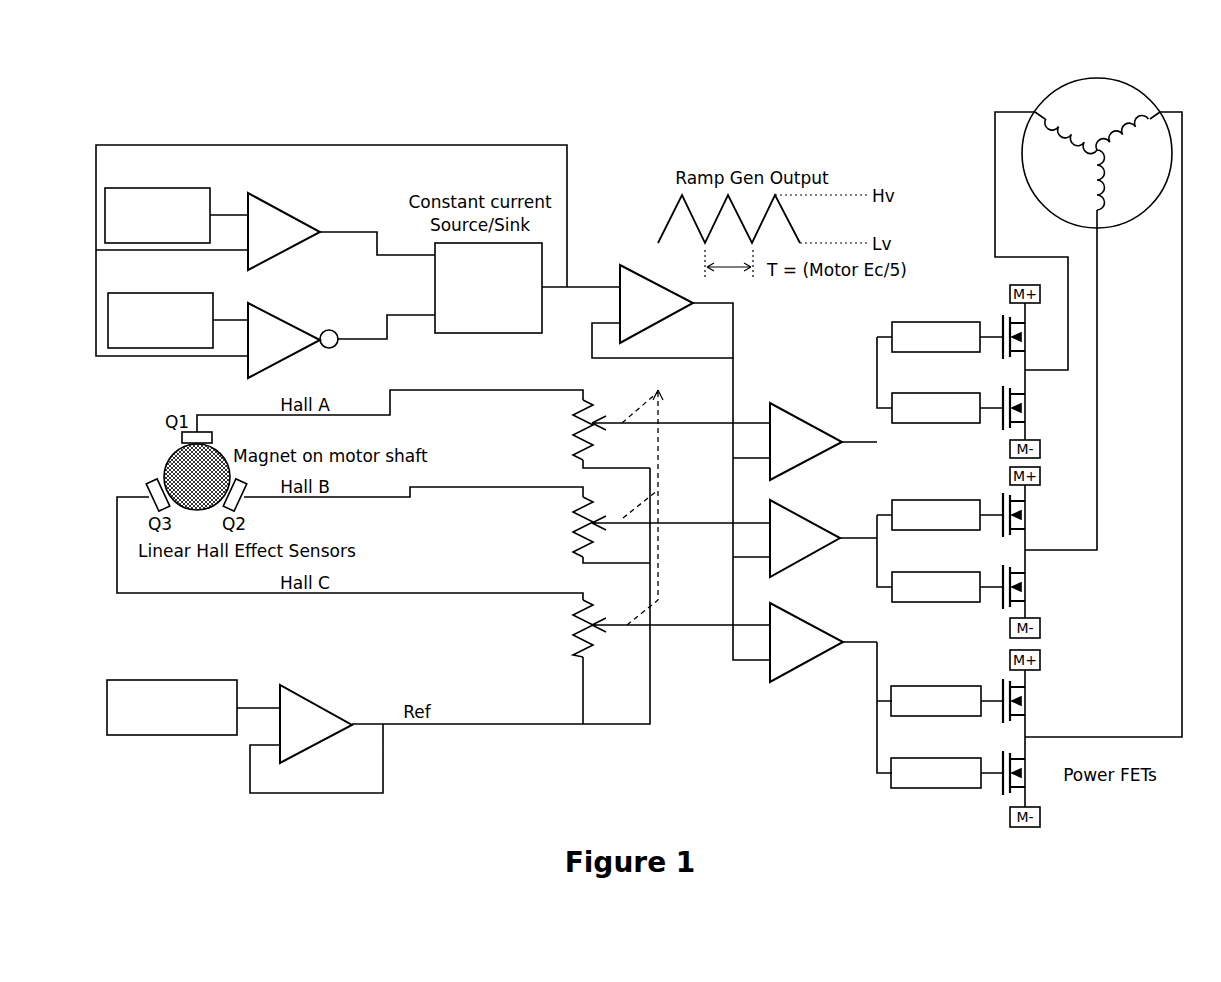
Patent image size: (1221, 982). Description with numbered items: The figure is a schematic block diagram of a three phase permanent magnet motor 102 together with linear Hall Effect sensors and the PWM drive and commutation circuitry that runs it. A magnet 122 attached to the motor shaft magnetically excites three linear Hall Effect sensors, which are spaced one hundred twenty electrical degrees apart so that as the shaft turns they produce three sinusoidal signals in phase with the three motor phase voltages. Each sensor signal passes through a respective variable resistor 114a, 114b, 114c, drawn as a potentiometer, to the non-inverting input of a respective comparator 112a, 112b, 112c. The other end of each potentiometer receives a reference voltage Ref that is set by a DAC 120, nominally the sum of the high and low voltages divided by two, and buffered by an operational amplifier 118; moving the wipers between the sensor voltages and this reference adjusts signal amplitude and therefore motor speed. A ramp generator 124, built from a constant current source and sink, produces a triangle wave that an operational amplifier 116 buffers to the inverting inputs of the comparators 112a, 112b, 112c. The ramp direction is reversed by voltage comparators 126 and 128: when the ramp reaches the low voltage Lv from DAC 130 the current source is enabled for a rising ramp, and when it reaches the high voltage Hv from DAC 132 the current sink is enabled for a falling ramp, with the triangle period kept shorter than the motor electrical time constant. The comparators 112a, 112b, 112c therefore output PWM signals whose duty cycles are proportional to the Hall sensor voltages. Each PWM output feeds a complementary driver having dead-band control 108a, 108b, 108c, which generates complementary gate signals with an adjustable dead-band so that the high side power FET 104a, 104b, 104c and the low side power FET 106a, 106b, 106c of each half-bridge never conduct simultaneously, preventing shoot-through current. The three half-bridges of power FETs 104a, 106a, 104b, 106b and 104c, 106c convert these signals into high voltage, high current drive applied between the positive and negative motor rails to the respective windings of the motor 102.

The motor 102 is at (1100, 83).
The high side power FET 104a is at (1001, 320).
The high side power FET 104b is at (1028, 506).
The high side power FET 104c is at (1028, 686).
The low side power FET 106a is at (1030, 413).
The low side power FET 106b is at (1028, 597).
The low side power FET 106c is at (1028, 786).
The complementary driver having dead-band control 108a is at (947, 372).
The complementary driver having dead-band control 108b is at (947, 551).
The complementary driver having dead-band control 108c is at (947, 737).
The comparator 112a is at (803, 410).
The comparator 112b is at (803, 510).
The comparator 112c is at (803, 617).
The variable resistor 114a is at (570, 448).
The variable resistor 114b is at (570, 550).
The variable resistor 114c is at (573, 653).
The operational amplifier 116 is at (656, 283).
The operational amplifier 118 is at (310, 697).
The DAC 120 is at (184, 677).
The magnet 122 is at (167, 460).
The ramp generator 124 is at (470, 338).
The voltage comparator 126 is at (287, 208).
The voltage comparator 128 is at (287, 313).
The DAC 130 is at (164, 190).
The DAC 132 is at (166, 294).